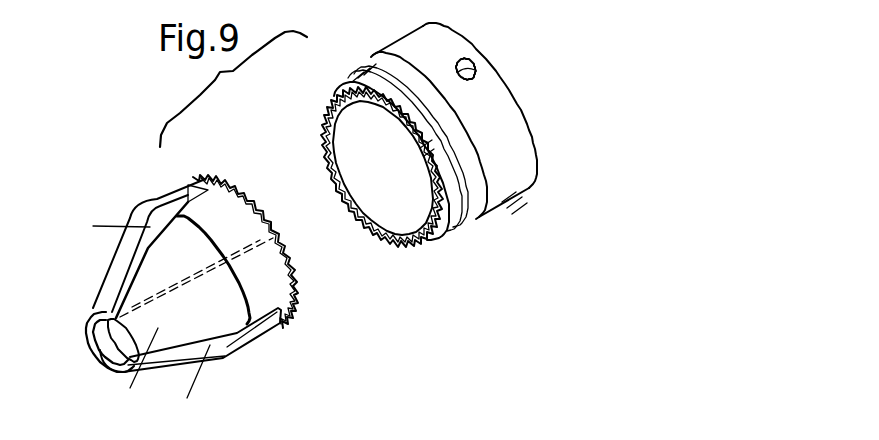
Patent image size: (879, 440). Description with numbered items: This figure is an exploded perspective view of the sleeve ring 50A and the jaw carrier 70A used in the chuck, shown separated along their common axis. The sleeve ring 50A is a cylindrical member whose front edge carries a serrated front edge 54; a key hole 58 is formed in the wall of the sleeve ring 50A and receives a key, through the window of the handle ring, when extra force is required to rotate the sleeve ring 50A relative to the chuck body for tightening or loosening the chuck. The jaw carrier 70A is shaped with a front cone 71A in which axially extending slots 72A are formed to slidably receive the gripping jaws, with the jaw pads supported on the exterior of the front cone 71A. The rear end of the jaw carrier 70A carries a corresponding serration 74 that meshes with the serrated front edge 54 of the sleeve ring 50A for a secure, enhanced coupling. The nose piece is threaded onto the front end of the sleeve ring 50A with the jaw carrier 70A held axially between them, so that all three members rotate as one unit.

The sleeve ring 50A is at (443, 47).
The serrated front edge 54 is at (323, 137).
The key hole 58 is at (477, 68).
The jaw carrier 70A is at (283, 328).
The front cone 71A is at (125, 376).
The axially extending slots 72A is at (136, 319).
The serration 74 is at (243, 188).